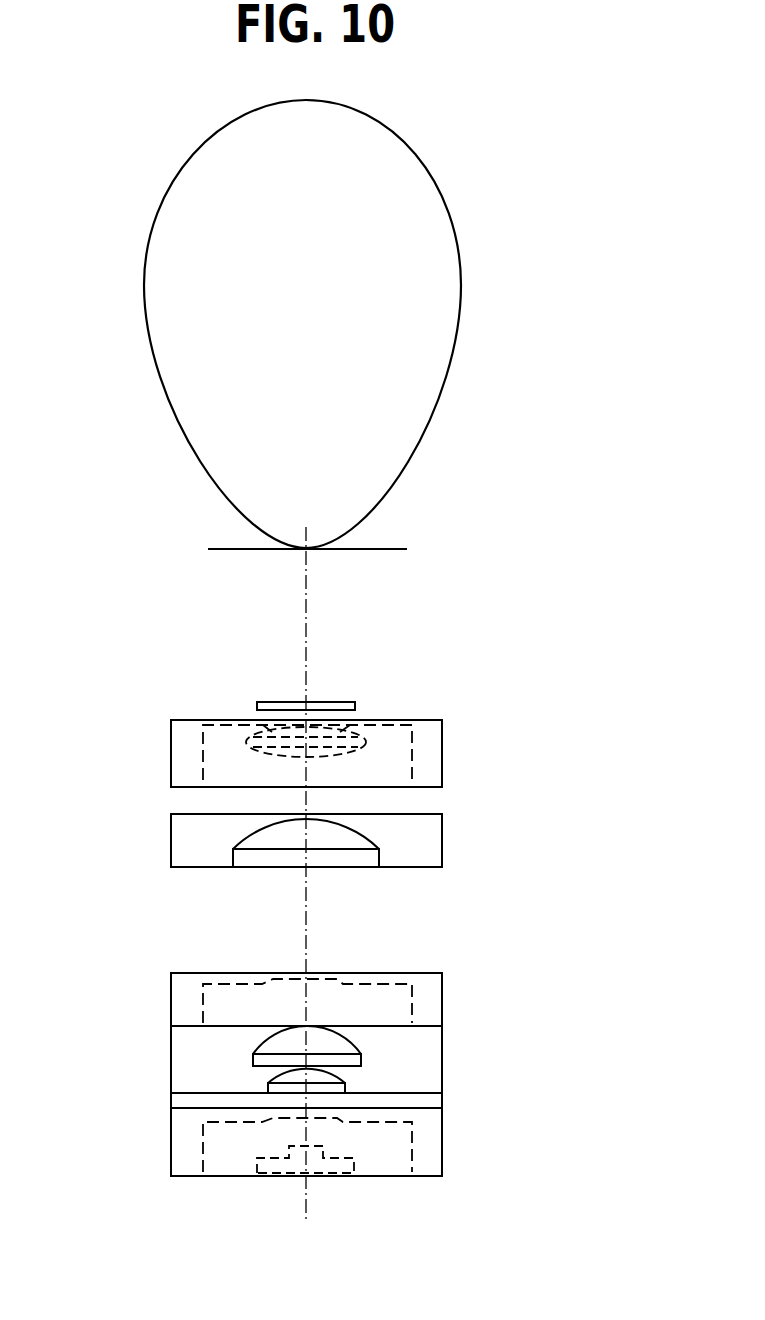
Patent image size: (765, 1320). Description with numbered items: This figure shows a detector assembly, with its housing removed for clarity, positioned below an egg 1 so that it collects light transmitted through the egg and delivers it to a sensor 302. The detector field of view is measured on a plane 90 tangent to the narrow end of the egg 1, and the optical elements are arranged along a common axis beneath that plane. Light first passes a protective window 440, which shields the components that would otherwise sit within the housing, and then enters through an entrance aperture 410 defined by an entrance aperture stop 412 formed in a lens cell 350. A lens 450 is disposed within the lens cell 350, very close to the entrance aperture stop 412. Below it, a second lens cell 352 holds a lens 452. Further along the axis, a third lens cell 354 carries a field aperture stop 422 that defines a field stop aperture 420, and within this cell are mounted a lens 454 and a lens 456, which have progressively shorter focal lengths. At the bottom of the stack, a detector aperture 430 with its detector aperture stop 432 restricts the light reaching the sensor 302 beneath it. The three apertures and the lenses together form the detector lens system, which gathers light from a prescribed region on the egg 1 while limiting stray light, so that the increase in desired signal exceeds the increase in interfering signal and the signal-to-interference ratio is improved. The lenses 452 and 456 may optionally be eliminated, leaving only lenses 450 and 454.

The egg 1 is at (426, 283).
The plane 90 is at (377, 551).
The lens cell 350 is at (393, 756).
The entrance aperture stop 412 is at (432, 730).
The protective window 440 is at (333, 698).
The entrance aperture 410 is at (335, 719).
The lens 450 is at (250, 743).
The lens cell 352 is at (423, 836).
The lens 452 is at (258, 838).
The lens cell 354 is at (428, 1045).
The field aperture stop 422 is at (430, 983).
The field stop aperture 420 is at (319, 968).
The lens 454 is at (285, 1042).
The lens 456 is at (285, 1072).
The detector aperture 430 is at (325, 1107).
The detector aperture stop 432 is at (420, 1150).
The sensor 302 is at (302, 1152).